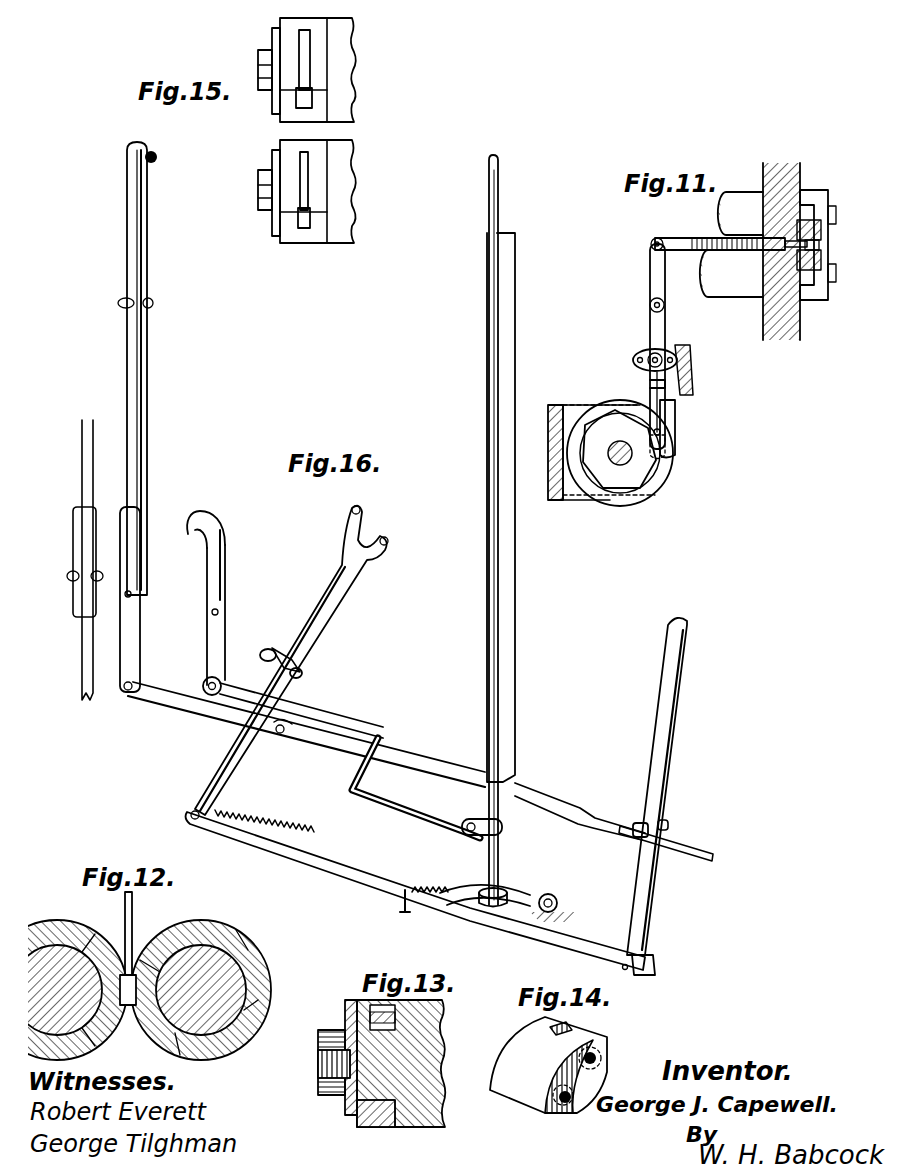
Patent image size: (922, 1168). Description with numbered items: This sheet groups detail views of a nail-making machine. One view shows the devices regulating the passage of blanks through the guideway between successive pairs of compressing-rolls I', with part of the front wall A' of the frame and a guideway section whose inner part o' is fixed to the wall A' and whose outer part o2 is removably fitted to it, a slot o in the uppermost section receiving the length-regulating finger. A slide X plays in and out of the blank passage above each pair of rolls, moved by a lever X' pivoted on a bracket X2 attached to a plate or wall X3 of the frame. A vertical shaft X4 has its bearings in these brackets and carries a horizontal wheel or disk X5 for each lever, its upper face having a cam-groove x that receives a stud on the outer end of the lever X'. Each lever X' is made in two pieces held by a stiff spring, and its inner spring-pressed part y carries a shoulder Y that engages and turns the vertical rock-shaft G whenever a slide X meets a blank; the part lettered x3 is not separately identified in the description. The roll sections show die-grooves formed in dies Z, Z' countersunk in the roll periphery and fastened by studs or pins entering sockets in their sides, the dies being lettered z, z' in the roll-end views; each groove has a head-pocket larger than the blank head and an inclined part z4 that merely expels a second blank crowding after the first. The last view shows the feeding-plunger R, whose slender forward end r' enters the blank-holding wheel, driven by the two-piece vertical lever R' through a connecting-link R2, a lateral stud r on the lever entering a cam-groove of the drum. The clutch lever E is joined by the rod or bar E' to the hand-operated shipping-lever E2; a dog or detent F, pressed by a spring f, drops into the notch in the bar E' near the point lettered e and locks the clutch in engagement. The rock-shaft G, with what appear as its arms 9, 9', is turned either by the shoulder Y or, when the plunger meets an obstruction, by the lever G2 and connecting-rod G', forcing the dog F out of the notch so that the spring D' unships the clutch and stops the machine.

In FIG. 15, the clamping jaw plate z' is at (271, 147).
In FIG. 13, the clamping jaw plate z' is at (356, 1069).
In FIG. 15, the inclined part of die-groove z4 is at (310, 36).
In FIG. 12, the inclined part of die-groove z4 is at (62, 920).
In FIG. 15, the jaw block z is at (267, 122).
In FIG. 14, the jaw block z is at (548, 1065).
In FIG. 15, the compressing-rolls I' is at (327, 130).
In FIG. 11, the compressing-rolls I' is at (731, 244).
In FIG. 12, the compressing-rolls I' is at (147, 906).
In FIG. 13, the compressing-rolls I' is at (410, 1063).
In FIG. 11, the front wall A' is at (769, 247).
In FIG. 11, the slide X is at (729, 236).
In FIG. 11, the lever X' is at (678, 351).
In FIG. 11, the bracket X2 is at (572, 412).
In FIG. 11, the plate or wall X3 is at (546, 452).
In FIG. 11, the vertical shaft X4 is at (620, 462).
In FIG. 11, the horizontal wheels or disks X5 is at (660, 508).
In FIG. 11, the cam-groove x is at (660, 480).
In FIG. 11, the connecting link x3 is at (660, 400).
In FIG. 11, the inner spring-pressed part y is at (650, 336).
In FIG. 11, the shoulder Y is at (678, 352).
In FIG. 11, the vertical rock-shaft G is at (691, 370).
In FIG. 16, the vertical rock-shaft G is at (493, 530).
In FIG. 11, the slot o is at (822, 245).
In FIG. 11, the inner part of guideway section o' is at (820, 246).
In FIG. 11, the outer part of guideway section o2 is at (819, 245).
In FIG. 16, the vertical lever R' is at (143, 417).
In FIG. 16, the lateral stud r is at (157, 154).
In FIG. 16, the connecting-link R2 is at (306, 730).
In FIG. 16, the lever G2 is at (285, 624).
In FIG. 16, the lever E is at (289, 662).
In FIG. 16, the spring D' is at (264, 812).
In FIG. 16, the rod or bar E' is at (420, 893).
In FIG. 16, the connecting-rod G' is at (416, 788).
In FIG. 16, the clamp 9 is at (493, 833).
In FIG. 16, the collar 9' is at (490, 921).
In FIG. 16, the plunger R is at (580, 811).
In FIG. 16, the slender forward end of plunger r' is at (666, 840).
In FIG. 16, the shipping-lever E2 is at (665, 786).
In FIG. 16, the dog or detent F is at (507, 891).
In FIG. 16, the spring f is at (430, 880).
In FIG. 16, the stop e is at (450, 905).
In FIG. 12, the die Z is at (135, 990).
In FIG. 12, the die Z' is at (233, 1067).